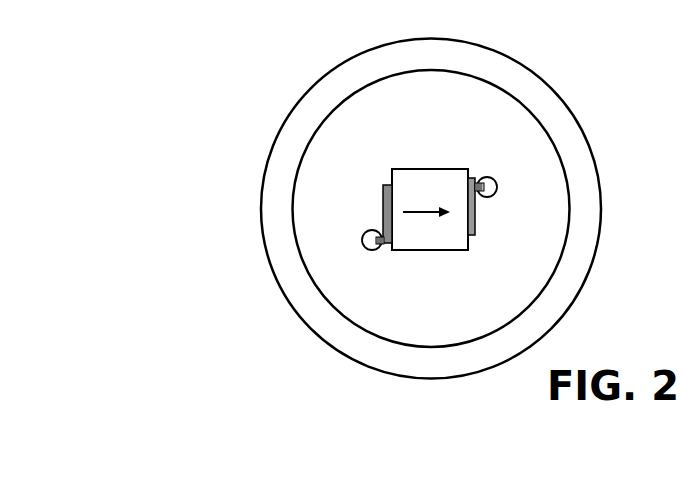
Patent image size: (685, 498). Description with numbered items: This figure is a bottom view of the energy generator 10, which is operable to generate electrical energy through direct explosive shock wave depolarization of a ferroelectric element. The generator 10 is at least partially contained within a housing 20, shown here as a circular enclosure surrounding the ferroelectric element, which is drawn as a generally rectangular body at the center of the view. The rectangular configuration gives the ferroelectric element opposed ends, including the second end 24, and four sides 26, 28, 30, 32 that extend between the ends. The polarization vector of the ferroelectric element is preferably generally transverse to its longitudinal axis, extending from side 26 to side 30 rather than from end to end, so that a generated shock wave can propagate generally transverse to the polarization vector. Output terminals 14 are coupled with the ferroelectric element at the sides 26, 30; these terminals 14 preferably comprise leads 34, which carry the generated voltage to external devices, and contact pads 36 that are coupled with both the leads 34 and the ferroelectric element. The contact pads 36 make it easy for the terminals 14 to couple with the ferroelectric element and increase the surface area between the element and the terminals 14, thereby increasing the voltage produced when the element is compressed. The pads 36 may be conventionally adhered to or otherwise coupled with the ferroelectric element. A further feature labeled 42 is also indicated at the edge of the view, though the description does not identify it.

The energy generator 10 is at (287, 53).
The output terminals 14 is at (363, 211).
The housing 20 is at (577, 183).
The second end 24 is at (447, 238).
The side 26 is at (391, 180).
The side 28 is at (430, 168).
The side 30 is at (469, 245).
The side 32 is at (408, 250).
The leads 34 is at (369, 250).
The contact pads 36 is at (383, 192).
The conduit 42 is at (667, 0).